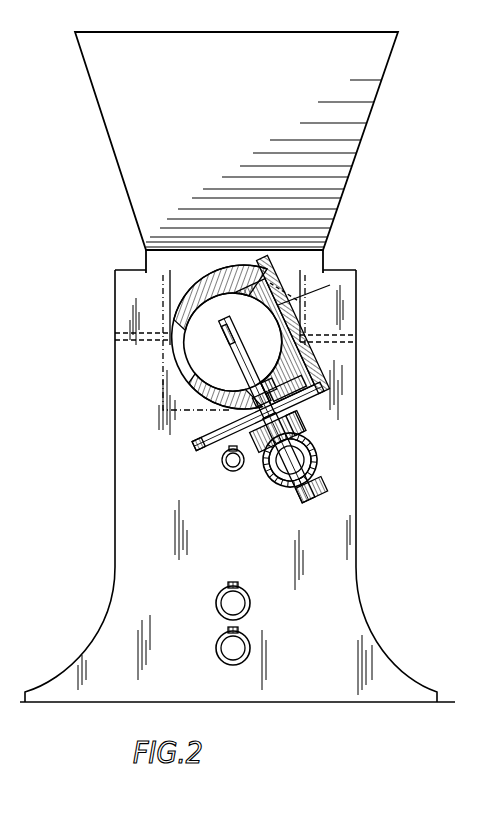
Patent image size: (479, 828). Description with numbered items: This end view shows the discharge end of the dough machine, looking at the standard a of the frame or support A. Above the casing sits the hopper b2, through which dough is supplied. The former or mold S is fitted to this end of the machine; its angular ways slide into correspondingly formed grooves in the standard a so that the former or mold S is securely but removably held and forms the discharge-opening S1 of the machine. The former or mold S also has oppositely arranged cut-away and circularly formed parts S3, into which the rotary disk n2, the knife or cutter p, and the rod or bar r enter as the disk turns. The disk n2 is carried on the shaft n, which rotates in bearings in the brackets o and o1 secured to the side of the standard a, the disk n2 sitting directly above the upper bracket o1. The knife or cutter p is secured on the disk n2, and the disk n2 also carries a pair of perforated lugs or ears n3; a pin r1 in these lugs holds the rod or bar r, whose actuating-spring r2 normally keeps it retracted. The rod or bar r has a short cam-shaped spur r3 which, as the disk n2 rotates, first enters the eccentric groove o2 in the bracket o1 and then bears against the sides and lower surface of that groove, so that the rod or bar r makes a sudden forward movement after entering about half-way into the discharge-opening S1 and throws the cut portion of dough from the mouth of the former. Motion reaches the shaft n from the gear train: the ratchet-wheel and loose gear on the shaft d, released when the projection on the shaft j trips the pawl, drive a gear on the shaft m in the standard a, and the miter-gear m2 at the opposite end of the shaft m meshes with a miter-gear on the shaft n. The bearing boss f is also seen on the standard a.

The hopper b2 is at (236, 152).
The frame or support A is at (237, 486).
The standard a is at (235, 340).
The cut-away and circularly-formed parts S3 is at (191, 290).
The discharge-opening S1 is at (233, 342).
The former or mold S is at (292, 284).
The knife or cutter p is at (302, 294).
The rod or bar r is at (227, 352).
The perforated lugs or ears n3 is at (243, 398).
The cam-shaped spur r3 is at (270, 388).
The pin r1 is at (281, 395).
The actuating-spring r2 is at (258, 416).
The upper bracket o1 is at (212, 440).
The disk n2 is at (305, 406).
The eccentric groove o2 is at (300, 425).
The shaft n is at (264, 474).
The shaft m is at (312, 452).
The miter-gear m2 is at (275, 470).
The bracket o is at (292, 503).
The shaft d is at (233, 462).
The shaft j is at (237, 603).
The bearing boss f is at (232, 649).